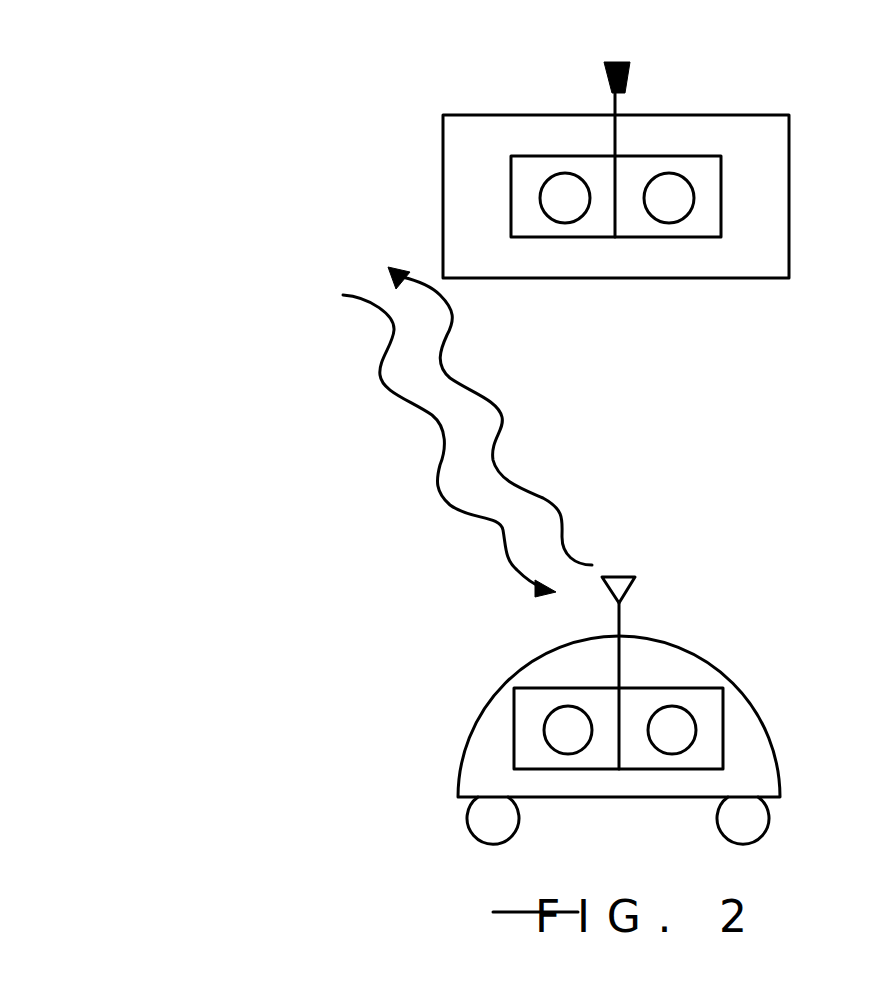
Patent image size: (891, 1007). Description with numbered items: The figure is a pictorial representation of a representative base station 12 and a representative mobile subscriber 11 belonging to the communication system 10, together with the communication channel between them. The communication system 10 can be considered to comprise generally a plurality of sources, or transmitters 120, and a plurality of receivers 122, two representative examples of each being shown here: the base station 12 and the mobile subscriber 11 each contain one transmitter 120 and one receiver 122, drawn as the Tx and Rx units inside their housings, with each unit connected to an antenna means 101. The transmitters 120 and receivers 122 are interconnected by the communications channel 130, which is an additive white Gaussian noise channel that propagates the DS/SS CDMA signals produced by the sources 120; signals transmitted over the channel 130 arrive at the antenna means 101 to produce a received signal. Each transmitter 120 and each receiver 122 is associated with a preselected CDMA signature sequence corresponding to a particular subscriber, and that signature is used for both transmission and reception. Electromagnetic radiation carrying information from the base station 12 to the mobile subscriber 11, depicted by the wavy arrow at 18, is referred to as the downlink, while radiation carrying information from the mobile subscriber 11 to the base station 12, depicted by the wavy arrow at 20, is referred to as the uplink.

The communication system 10 is at (210, 362).
The mobile subscriber 11 is at (745, 747).
The base station 12 is at (750, 138).
The downlink 18 is at (440, 463).
The uplink 20 is at (560, 510).
The antenna means 101 is at (625, 75).
The transmitter 120 is at (603, 217).
The receiver 122 is at (707, 212).
The communications channel 130 is at (396, 576).